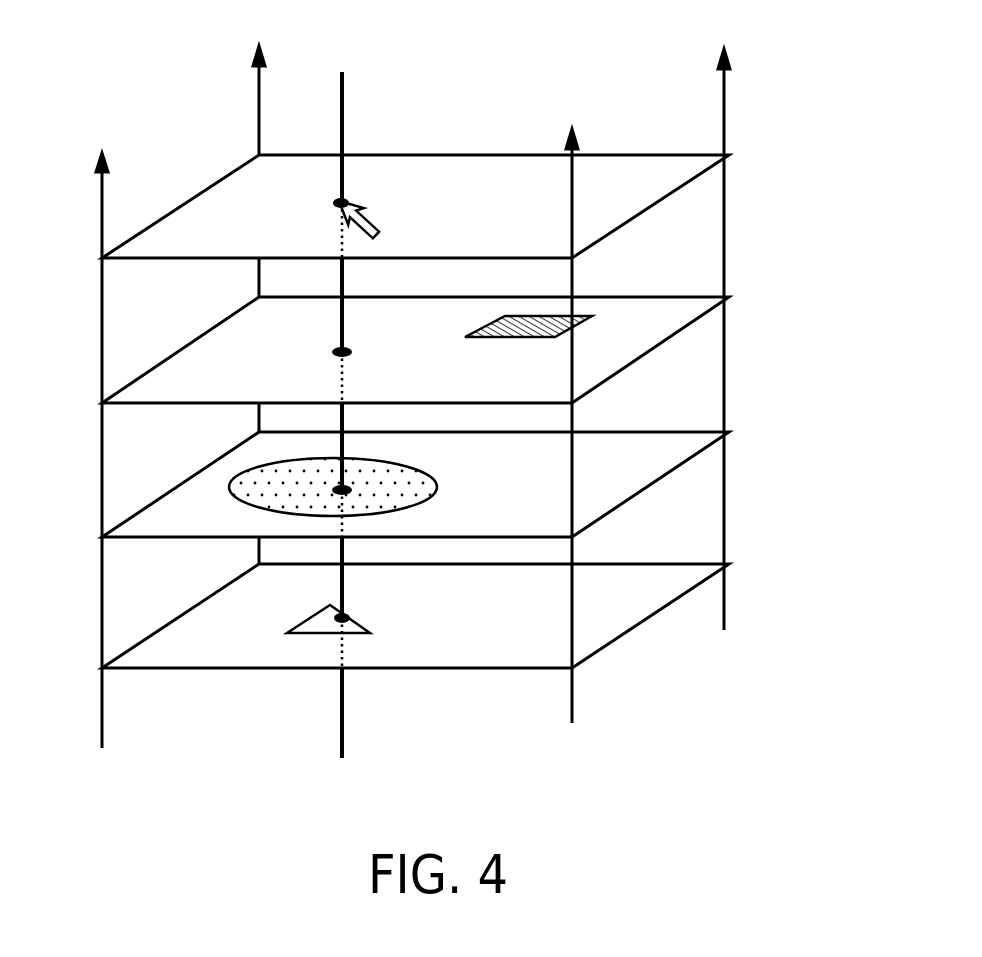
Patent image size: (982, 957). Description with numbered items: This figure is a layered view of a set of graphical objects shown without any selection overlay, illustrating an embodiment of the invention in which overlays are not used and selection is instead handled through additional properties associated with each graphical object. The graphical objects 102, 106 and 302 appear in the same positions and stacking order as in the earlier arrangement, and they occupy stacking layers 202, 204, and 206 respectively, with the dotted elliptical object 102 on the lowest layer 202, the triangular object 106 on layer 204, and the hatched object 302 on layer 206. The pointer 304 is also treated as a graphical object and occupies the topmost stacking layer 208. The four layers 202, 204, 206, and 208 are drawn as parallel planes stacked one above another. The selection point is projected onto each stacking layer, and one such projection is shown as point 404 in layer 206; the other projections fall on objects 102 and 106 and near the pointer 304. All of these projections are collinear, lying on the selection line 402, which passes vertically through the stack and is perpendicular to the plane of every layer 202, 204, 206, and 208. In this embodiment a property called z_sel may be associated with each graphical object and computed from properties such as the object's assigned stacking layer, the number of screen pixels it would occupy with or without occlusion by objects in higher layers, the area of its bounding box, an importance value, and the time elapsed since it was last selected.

The graphical object 102 is at (418, 473).
The graphical object 106 is at (370, 630).
The stacking layer 202 is at (593, 645).
The stacking layer 204 is at (648, 459).
The stacking layer 206 is at (675, 325).
The stacking layer 208 is at (676, 184).
The graphical object 302 is at (530, 346).
The pointer 304 is at (380, 232).
The selection line 402 is at (342, 88).
The point 404 is at (334, 352).